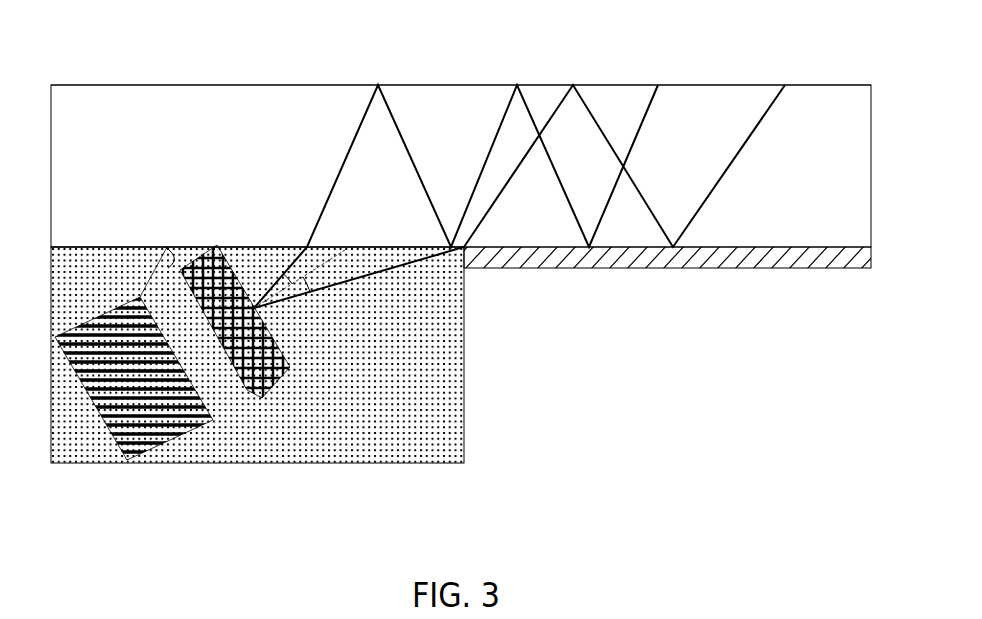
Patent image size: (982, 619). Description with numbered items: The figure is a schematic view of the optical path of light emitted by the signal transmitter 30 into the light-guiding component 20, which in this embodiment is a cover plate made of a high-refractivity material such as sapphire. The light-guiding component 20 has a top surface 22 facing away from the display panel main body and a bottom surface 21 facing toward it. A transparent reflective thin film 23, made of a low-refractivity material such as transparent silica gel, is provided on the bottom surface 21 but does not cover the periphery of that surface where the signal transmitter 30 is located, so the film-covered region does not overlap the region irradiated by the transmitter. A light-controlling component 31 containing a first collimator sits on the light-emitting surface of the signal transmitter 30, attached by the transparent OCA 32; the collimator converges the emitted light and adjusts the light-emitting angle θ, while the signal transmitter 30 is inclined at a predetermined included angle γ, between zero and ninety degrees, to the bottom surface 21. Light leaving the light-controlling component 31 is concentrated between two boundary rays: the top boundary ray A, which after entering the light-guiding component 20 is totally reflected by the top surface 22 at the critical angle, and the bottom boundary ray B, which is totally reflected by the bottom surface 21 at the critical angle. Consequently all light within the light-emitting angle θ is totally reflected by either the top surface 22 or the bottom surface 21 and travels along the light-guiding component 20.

The light-guiding component 20 is at (832, 130).
The bottom surface 21 is at (84, 240).
The top surface 22 is at (290, 82).
The transparent reflective thin film 23 is at (553, 260).
The signal transmitter 30 is at (170, 413).
The light-controlling component 31 is at (255, 385).
The transparent OCA 32 is at (397, 407).
The top boundary ray A is at (283, 257).
The bottom boundary ray B is at (332, 292).